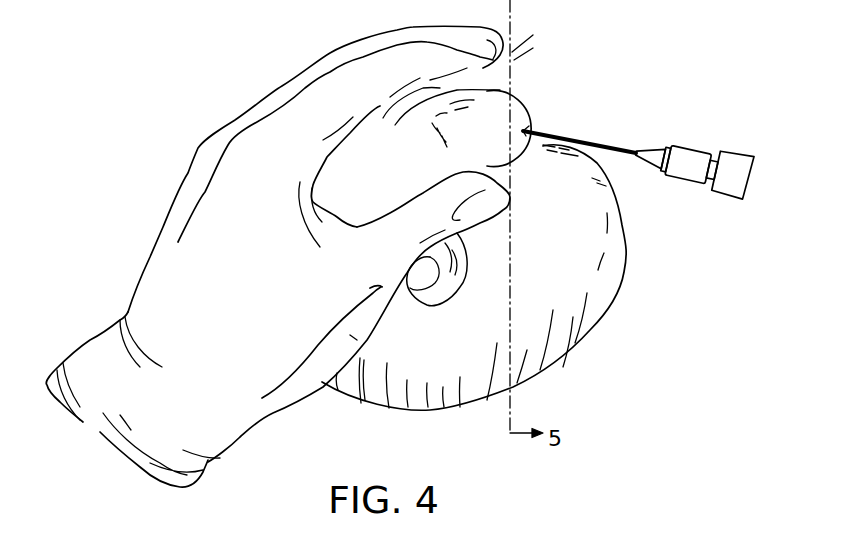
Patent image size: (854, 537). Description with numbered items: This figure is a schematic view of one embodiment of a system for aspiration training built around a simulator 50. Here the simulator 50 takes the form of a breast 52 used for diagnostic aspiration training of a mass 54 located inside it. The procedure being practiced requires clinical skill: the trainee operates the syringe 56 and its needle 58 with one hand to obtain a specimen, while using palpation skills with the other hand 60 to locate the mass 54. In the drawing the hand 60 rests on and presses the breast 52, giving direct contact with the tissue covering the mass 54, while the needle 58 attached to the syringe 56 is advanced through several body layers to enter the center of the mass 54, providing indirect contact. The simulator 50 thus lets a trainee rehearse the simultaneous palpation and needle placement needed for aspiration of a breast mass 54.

The simulator 50 is at (460, 209).
The breast 52 is at (592, 293).
The mass 54 is at (523, 107).
The syringe 56 is at (697, 150).
The needle 58 is at (604, 147).
The hand 60 is at (259, 252).